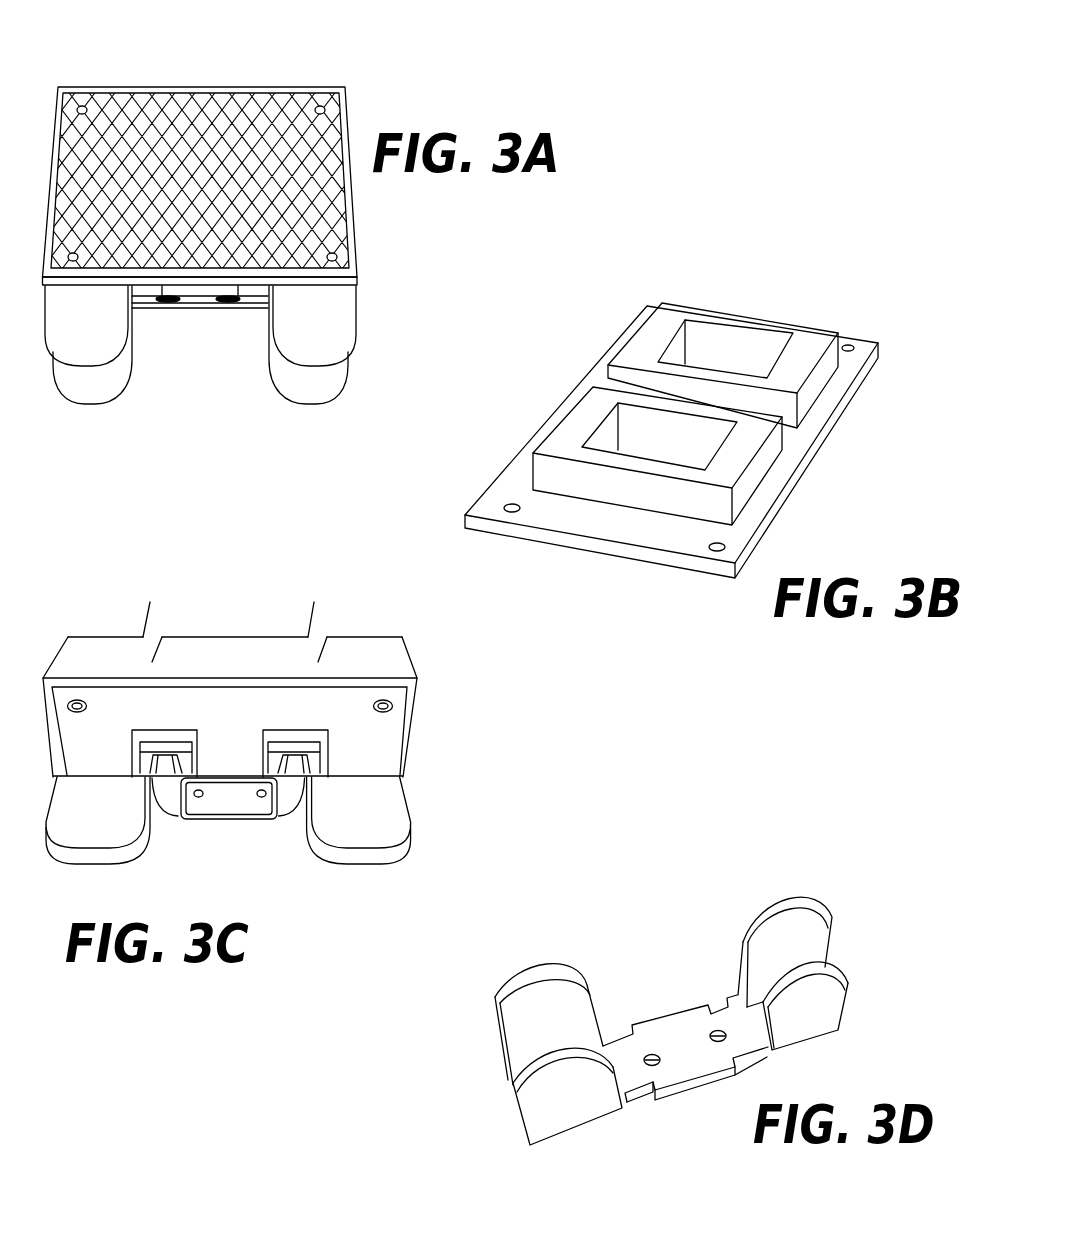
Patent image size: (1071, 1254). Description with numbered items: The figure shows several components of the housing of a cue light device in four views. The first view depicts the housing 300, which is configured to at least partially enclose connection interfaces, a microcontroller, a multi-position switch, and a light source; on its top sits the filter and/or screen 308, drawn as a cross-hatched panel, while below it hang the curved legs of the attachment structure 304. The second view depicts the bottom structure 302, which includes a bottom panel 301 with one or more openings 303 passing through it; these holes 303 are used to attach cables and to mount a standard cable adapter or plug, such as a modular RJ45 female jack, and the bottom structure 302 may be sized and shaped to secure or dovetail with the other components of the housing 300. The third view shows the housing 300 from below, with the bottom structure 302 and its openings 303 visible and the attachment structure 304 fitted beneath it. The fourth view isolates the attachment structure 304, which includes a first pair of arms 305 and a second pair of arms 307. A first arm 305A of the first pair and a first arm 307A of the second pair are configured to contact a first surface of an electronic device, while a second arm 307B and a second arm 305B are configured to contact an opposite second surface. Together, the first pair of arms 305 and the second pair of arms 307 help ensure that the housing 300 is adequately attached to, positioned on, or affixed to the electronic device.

In FIG. 3A, the housing 300 is at (240, 215).
In FIG. 3B, the bottom panel 301 is at (800, 448).
In FIG. 3B, the bottom structure 302 is at (797, 303).
In FIG. 3C, the bottom structure 302 is at (393, 727).
In FIG. 3B, the openings 303 is at (675, 352).
In FIG. 3C, the openings 303 is at (290, 768).
In FIG. 3A, the attachment structure 304 is at (343, 325).
In FIG. 3C, the attachment structure 304 is at (415, 811).
In FIG. 3D, the attachment structure 304 is at (666, 963).
In FIG. 3D, the first pair of arms 305 is at (518, 1025).
In FIG. 3D, the first arm of the first pair of arms 305A is at (528, 977).
In FIG. 3D, the second arm 305B is at (532, 1100).
In FIG. 3D, the second pair of arms 307 is at (828, 947).
In FIG. 3D, the first arm of the second pair of arms 307A is at (785, 928).
In FIG. 3D, the second arm 307B is at (836, 1013).
In FIG. 3A, the filter and/or screen 308 is at (280, 115).